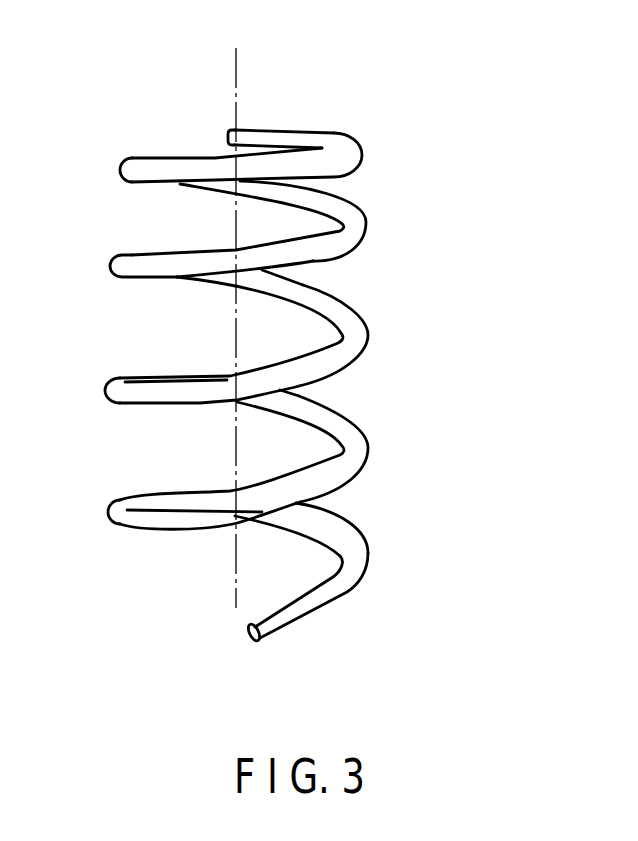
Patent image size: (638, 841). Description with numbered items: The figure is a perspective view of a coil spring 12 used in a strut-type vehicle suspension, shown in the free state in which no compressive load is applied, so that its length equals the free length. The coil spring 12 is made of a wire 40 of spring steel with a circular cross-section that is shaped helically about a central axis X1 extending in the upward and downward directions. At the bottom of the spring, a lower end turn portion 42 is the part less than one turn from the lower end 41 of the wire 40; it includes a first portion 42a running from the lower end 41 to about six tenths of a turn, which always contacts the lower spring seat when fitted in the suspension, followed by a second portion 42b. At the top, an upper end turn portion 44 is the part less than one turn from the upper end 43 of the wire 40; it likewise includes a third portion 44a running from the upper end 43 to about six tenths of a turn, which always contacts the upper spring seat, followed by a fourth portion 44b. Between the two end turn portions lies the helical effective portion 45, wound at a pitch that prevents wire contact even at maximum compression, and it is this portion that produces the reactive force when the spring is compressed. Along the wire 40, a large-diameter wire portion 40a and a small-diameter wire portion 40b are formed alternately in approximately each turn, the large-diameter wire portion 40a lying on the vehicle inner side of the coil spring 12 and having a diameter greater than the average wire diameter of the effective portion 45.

The coil spring 12 is at (453, 168).
The wire 40 is at (275, 331).
The large-diameter wire portion 40a is at (108, 267).
The small-diameter wire portion 40b is at (372, 222).
The lower end 41 is at (247, 633).
The lower end turn portion 42 is at (369, 570).
The first portion 42a is at (313, 607).
The second portion 42b is at (328, 516).
The upper end 43 is at (226, 135).
The upper end turn portion 44 is at (259, 96).
The third portion 44a is at (281, 137).
The fourth portion 44b is at (303, 160).
The effective portion 45 is at (488, 340).
The central axis X1 is at (234, 583).